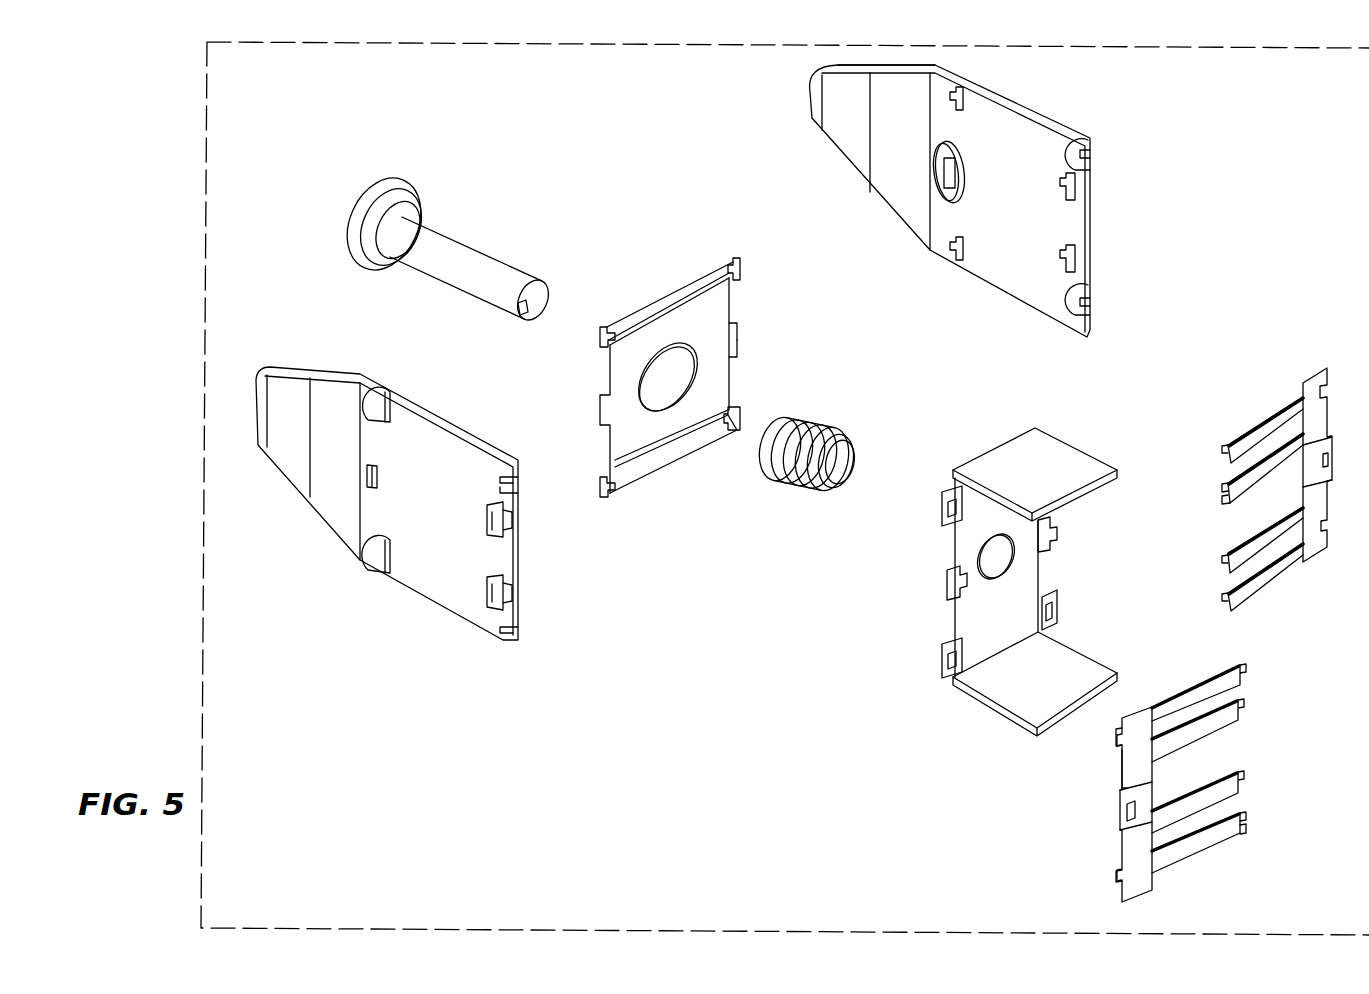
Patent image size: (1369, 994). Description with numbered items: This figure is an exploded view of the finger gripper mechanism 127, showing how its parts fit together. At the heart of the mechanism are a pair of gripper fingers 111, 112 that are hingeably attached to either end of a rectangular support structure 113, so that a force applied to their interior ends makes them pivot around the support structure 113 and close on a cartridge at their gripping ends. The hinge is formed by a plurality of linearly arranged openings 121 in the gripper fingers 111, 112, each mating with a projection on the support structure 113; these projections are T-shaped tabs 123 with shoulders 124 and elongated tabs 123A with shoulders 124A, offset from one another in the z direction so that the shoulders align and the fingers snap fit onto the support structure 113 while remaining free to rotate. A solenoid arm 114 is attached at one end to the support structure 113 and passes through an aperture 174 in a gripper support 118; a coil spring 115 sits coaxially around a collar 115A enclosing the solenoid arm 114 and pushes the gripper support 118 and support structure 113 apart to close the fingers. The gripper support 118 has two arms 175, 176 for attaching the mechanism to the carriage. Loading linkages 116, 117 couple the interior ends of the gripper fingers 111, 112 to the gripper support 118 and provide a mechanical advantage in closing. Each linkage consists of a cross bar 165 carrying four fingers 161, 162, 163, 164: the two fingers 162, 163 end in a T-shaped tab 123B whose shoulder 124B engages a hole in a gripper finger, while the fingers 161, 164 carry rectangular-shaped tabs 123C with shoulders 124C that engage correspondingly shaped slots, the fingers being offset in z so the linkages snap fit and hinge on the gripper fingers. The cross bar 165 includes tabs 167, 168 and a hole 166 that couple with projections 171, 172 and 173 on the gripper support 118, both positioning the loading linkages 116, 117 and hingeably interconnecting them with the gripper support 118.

The finger gripper mechanism 127 is at (287, 85).
The gripper finger 111 is at (1058, 125).
The gripper finger 112 is at (387, 503).
The support structure 113 is at (667, 378).
The solenoid arm 114 is at (463, 250).
The coil spring 115 is at (805, 449).
The collar 115A is at (838, 476).
The loading linkage 116 is at (1231, 465).
The loading linkage 117 is at (1183, 766).
The gripper support 118 is at (1002, 557).
The openings 121 is at (378, 477).
The T-shaped tabs 123 is at (600, 333).
The shoulders 124 is at (738, 262).
The elongated tabs 123A is at (738, 333).
The shoulders 124A is at (738, 352).
The T-shaped tab 123B is at (1222, 501).
The shoulder 124B is at (1222, 486).
The rectangular-shaped tabs 123C is at (1245, 817).
The shoulders 124C is at (1246, 831).
The finger 161 is at (1230, 667).
The finger 162 is at (1242, 703).
The finger 163 is at (1242, 777).
The finger 164 is at (1249, 840).
The cross bar 165 is at (1120, 770).
The hole 166 is at (1120, 815).
The tab 167 is at (1120, 732).
The tab 168 is at (1120, 885).
The projection 171 is at (943, 508).
The projection 172 is at (943, 655).
The projection 173 is at (948, 580).
The aperture 174 is at (998, 553).
The arm 175 is at (1055, 460).
The arm 176 is at (1020, 680).